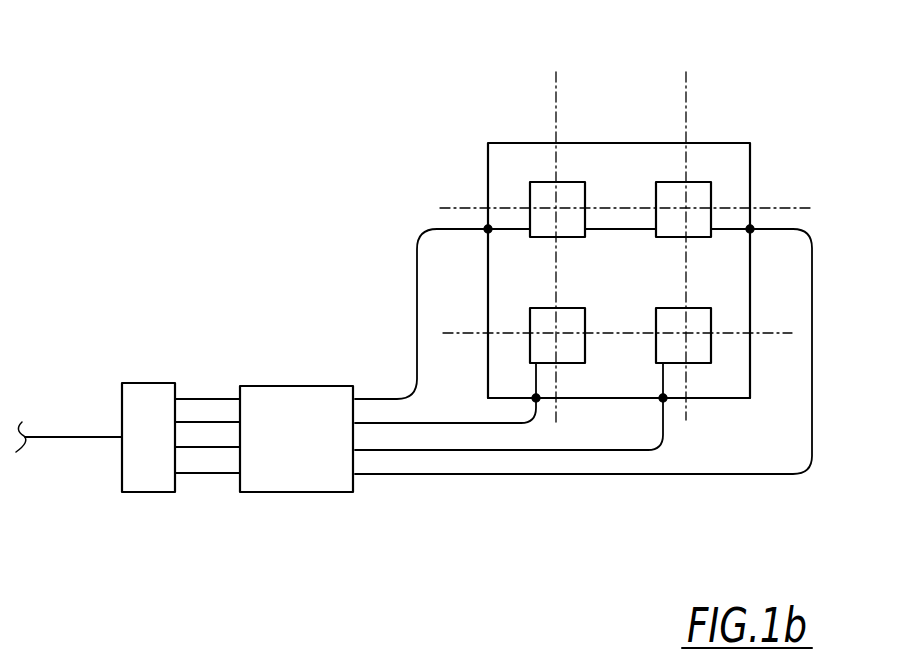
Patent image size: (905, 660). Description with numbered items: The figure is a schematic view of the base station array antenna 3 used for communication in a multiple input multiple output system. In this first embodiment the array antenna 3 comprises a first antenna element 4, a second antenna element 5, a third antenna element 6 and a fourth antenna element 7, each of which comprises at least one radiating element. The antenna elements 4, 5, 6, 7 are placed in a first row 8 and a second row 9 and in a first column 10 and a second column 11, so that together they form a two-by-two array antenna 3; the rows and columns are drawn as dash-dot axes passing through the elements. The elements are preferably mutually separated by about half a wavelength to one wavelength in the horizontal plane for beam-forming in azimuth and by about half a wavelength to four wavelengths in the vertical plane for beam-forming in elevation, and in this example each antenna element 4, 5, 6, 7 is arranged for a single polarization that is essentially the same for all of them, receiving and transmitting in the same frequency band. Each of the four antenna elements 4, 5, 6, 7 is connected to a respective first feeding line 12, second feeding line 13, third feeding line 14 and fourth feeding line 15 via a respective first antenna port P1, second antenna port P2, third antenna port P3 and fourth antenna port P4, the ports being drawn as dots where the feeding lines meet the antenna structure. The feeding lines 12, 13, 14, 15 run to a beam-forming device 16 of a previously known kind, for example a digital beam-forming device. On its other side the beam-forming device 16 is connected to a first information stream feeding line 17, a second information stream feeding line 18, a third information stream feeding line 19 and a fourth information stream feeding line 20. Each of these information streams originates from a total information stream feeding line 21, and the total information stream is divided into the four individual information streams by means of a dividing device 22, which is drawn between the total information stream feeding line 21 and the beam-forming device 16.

The array antenna 3 is at (758, 173).
The first antenna element 4 is at (574, 190).
The second antenna element 5 is at (700, 190).
The third antenna element 6 is at (538, 350).
The fourth antenna element 7 is at (700, 350).
The first row 8 is at (478, 203).
The second row 9 is at (462, 330).
The first column 10 is at (556, 128).
The second column 11 is at (686, 128).
The first feeding line 12 is at (415, 278).
The second feeding line 13 is at (815, 428).
The third feeding line 14 is at (457, 423).
The fourth feeding line 15 is at (593, 450).
The beam-forming device 16 is at (292, 395).
The first information stream feeding line 17 is at (226, 399).
The second information stream feeding line 18 is at (208, 422).
The third information stream feeding line 19 is at (210, 447).
The fourth information stream feeding line 20 is at (222, 473).
The total information stream feeding line 21 is at (77, 435).
The dividing device 22 is at (152, 392).
The first antenna port P1 is at (486, 227).
The second antenna port P2 is at (752, 228).
The third antenna port P3 is at (542, 408).
The fourth antenna port P4 is at (668, 408).